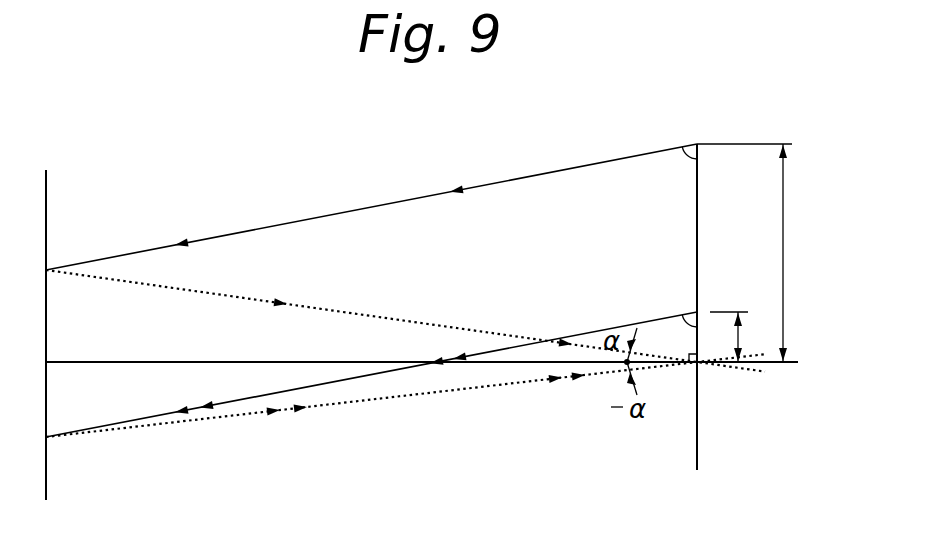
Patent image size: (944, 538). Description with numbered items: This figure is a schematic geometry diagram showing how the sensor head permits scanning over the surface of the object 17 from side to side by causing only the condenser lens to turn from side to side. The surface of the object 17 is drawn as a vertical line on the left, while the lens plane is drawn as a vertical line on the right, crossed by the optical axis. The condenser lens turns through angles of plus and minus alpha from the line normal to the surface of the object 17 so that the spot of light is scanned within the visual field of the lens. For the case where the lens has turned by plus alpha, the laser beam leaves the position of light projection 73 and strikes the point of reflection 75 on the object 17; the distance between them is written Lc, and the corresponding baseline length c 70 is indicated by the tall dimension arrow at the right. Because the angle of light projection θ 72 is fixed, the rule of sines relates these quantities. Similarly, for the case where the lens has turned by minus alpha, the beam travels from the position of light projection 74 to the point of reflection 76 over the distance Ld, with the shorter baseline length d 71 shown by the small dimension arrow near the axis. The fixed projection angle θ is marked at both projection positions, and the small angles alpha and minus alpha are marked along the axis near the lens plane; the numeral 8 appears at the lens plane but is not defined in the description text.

The object 17 is at (52, 316).
The lens / optical element plane 8 is at (700, 364).
The baseline length c 70 is at (783, 250).
The baseline length d 71 is at (738, 338).
The angle of light projection θ 72 is at (697, 144).
The position of light projection 73 is at (697, 144).
The position of light projection 74 is at (697, 312).
The point of reflection 75 is at (47, 268).
The point of reflection 76 is at (47, 436).